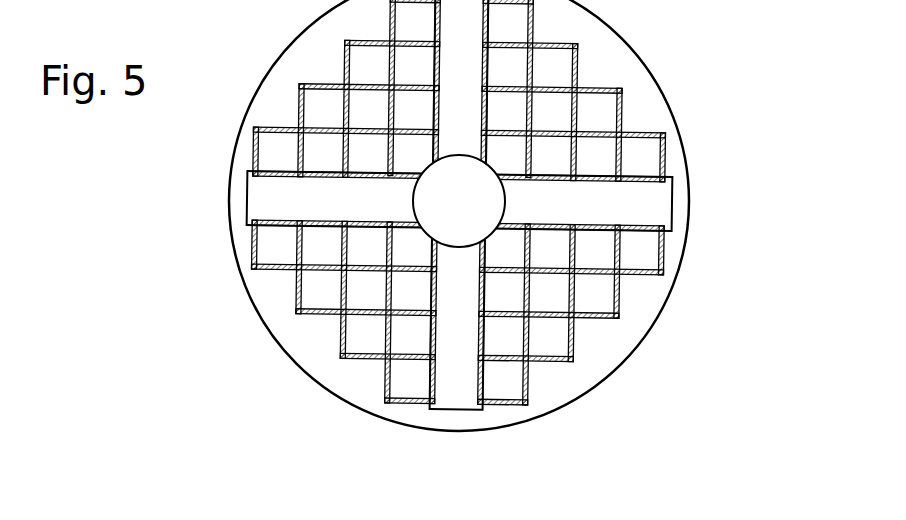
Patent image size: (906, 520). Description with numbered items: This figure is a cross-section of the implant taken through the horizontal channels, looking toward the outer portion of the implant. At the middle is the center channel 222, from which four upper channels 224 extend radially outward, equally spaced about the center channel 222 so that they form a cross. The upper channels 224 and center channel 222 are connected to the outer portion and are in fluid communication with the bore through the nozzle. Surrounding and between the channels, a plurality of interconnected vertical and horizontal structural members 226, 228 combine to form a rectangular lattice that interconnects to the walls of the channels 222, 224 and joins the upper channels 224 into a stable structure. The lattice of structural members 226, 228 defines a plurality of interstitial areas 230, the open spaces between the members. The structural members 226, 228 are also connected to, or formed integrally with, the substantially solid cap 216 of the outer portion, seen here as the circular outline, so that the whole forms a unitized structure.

The solid cap 216 is at (641, 36).
The center channel 222 is at (487, 215).
The upper channels 224 is at (606, 217).
The vertical structural members 226 is at (632, 278).
The horizontal structural members 228 is at (618, 303).
The interstitial areas 230 is at (542, 340).